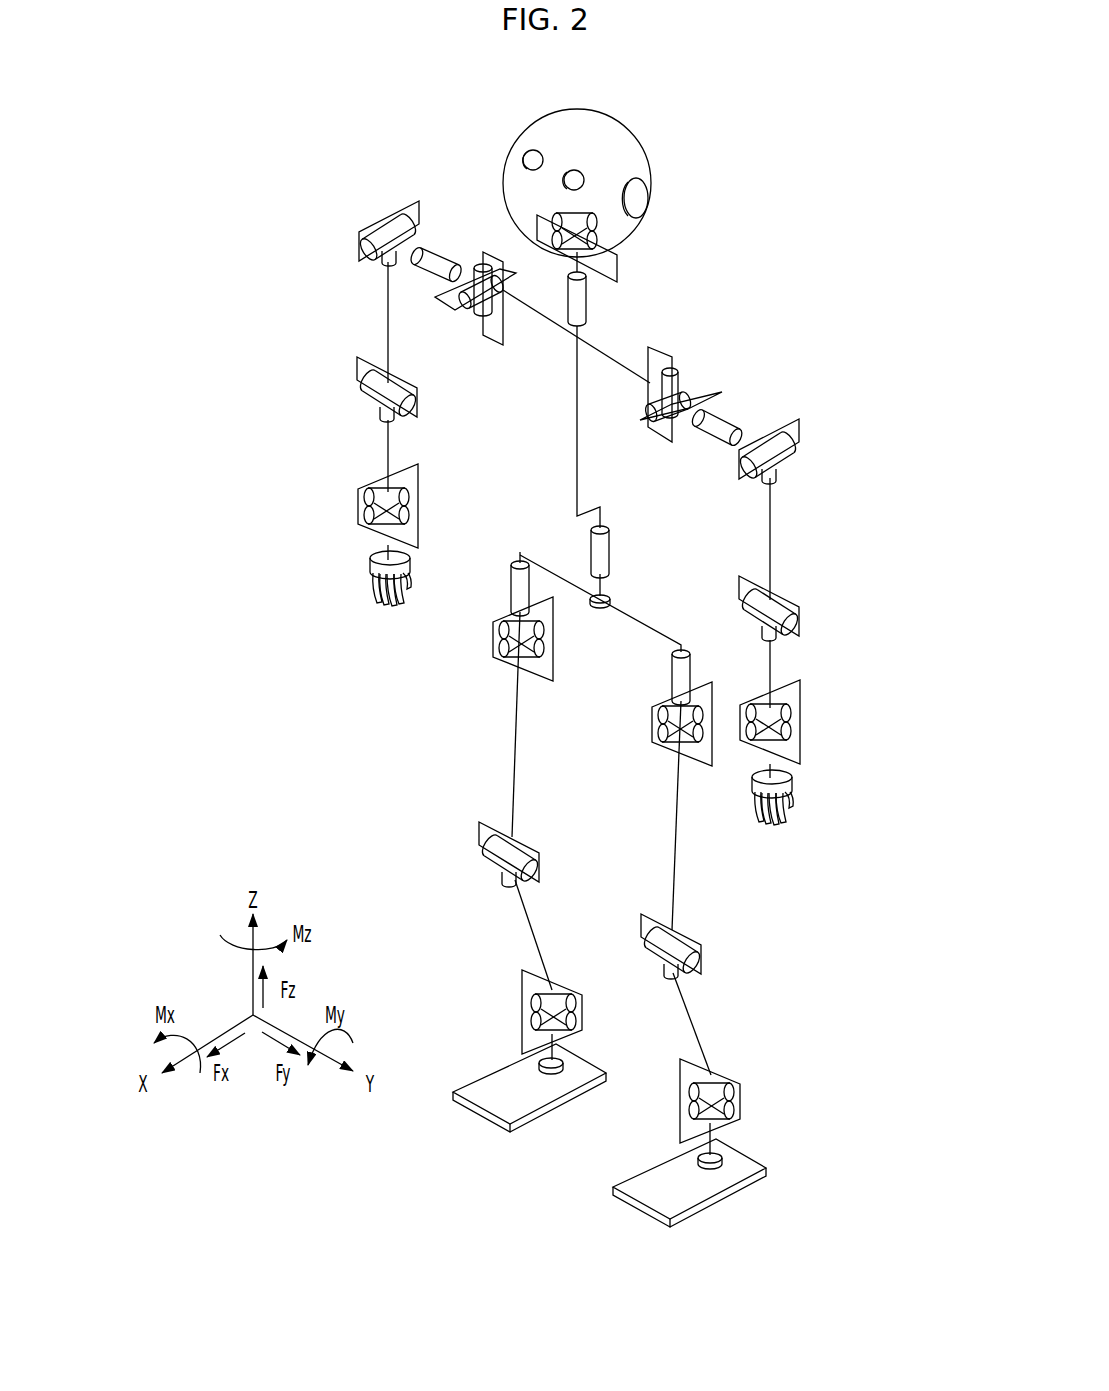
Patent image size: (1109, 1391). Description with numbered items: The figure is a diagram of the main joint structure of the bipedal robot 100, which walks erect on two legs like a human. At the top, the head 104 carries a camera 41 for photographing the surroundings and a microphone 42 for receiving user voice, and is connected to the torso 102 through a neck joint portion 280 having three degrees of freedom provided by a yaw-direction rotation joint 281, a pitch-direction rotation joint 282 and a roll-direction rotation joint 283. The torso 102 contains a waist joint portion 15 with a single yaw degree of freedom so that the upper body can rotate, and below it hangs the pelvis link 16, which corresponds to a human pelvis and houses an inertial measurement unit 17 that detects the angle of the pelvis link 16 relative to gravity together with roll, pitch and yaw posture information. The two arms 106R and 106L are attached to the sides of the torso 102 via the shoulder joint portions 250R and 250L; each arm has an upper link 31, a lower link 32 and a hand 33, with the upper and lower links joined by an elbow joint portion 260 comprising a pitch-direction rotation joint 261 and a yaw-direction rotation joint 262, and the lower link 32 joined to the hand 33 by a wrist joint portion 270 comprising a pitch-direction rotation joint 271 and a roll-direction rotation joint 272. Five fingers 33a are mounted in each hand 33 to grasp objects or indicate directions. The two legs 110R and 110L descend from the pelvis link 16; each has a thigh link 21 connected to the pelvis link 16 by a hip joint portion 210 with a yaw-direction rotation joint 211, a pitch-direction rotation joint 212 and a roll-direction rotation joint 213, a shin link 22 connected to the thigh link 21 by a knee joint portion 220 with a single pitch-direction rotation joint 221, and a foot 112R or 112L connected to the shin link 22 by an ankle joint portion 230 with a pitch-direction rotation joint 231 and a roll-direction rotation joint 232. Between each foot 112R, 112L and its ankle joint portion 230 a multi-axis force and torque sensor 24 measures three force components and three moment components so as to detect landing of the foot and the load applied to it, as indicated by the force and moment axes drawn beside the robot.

The robot 100 is at (858, 120).
The torso 102 is at (575, 397).
The head 104 is at (642, 132).
The right arm 106R is at (272, 379).
The left arm 106L is at (855, 590).
The right leg 110R is at (416, 797).
The left leg 110L is at (740, 888).
The right foot 112R is at (483, 1110).
The left foot 112L is at (640, 1200).
The waist joint portion 15 is at (607, 561).
The pelvis link 16 is at (657, 635).
The inertial measurement unit (IMU) 17 is at (611, 601).
The thigh link 21 is at (516, 764).
The shin link 22 is at (530, 931).
The multi-axis Force and Torque (F/T) sensor 24 is at (562, 1076).
The upper link 31 is at (386, 300).
The lower link 32 is at (386, 440).
The hand 33 is at (587, 685).
The fingers 33a is at (385, 606).
The camera 41 is at (562, 183).
The microphone 42 is at (645, 200).
The hip joint portion 210 is at (552, 718).
The yaw-direction rotation joint 211 is at (516, 588).
The pitch-direction rotation joint 212 is at (550, 645).
The roll-direction rotation joint 213 is at (510, 660).
The knee joint portion 220 is at (597, 889).
The pitch-direction rotation joint 221 is at (530, 858).
The ankle joint portion 230 is at (630, 1043).
The pitch-direction rotation joint 231 is at (575, 1022).
The roll-direction rotation joint 232 is at (560, 1006).
The right shoulder joint portion 250R is at (390, 206).
The left shoulder joint portion 250L is at (733, 379).
The elbow joint portion 260 is at (555, 481).
The pitch-direction rotation joint 261 is at (395, 386).
The yaw-direction rotation joint 262 is at (402, 420).
The wrist joint portion 270 is at (577, 613).
The pitch-direction rotation joint 271 is at (425, 515).
The roll-direction rotation joint 272 is at (417, 494).
The neck joint portion 280 is at (597, 249).
The yaw-direction rotation joint 281 is at (590, 300).
The pitch-direction rotation joint 282 is at (612, 240).
The roll-direction rotation joint 283 is at (548, 247).